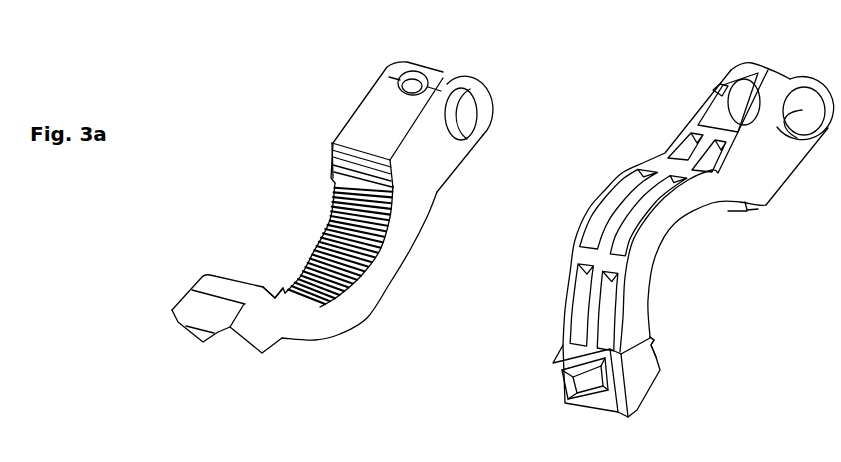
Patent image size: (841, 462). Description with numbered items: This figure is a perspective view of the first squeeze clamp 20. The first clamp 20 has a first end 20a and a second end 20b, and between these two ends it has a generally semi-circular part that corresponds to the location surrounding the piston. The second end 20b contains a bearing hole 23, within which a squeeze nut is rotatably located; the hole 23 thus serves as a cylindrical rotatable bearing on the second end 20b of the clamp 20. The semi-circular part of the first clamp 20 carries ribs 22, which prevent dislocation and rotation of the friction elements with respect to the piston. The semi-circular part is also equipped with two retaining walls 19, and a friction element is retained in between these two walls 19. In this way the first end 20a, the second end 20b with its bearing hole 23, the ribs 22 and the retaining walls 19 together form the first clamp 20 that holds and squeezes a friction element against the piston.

The retaining walls 19 is at (332, 165).
The first clamp 20 is at (330, 63).
The first end 20a is at (262, 345).
The second end 20b is at (445, 70).
The ribs 22 is at (340, 263).
The bearing hole 23 is at (463, 117).